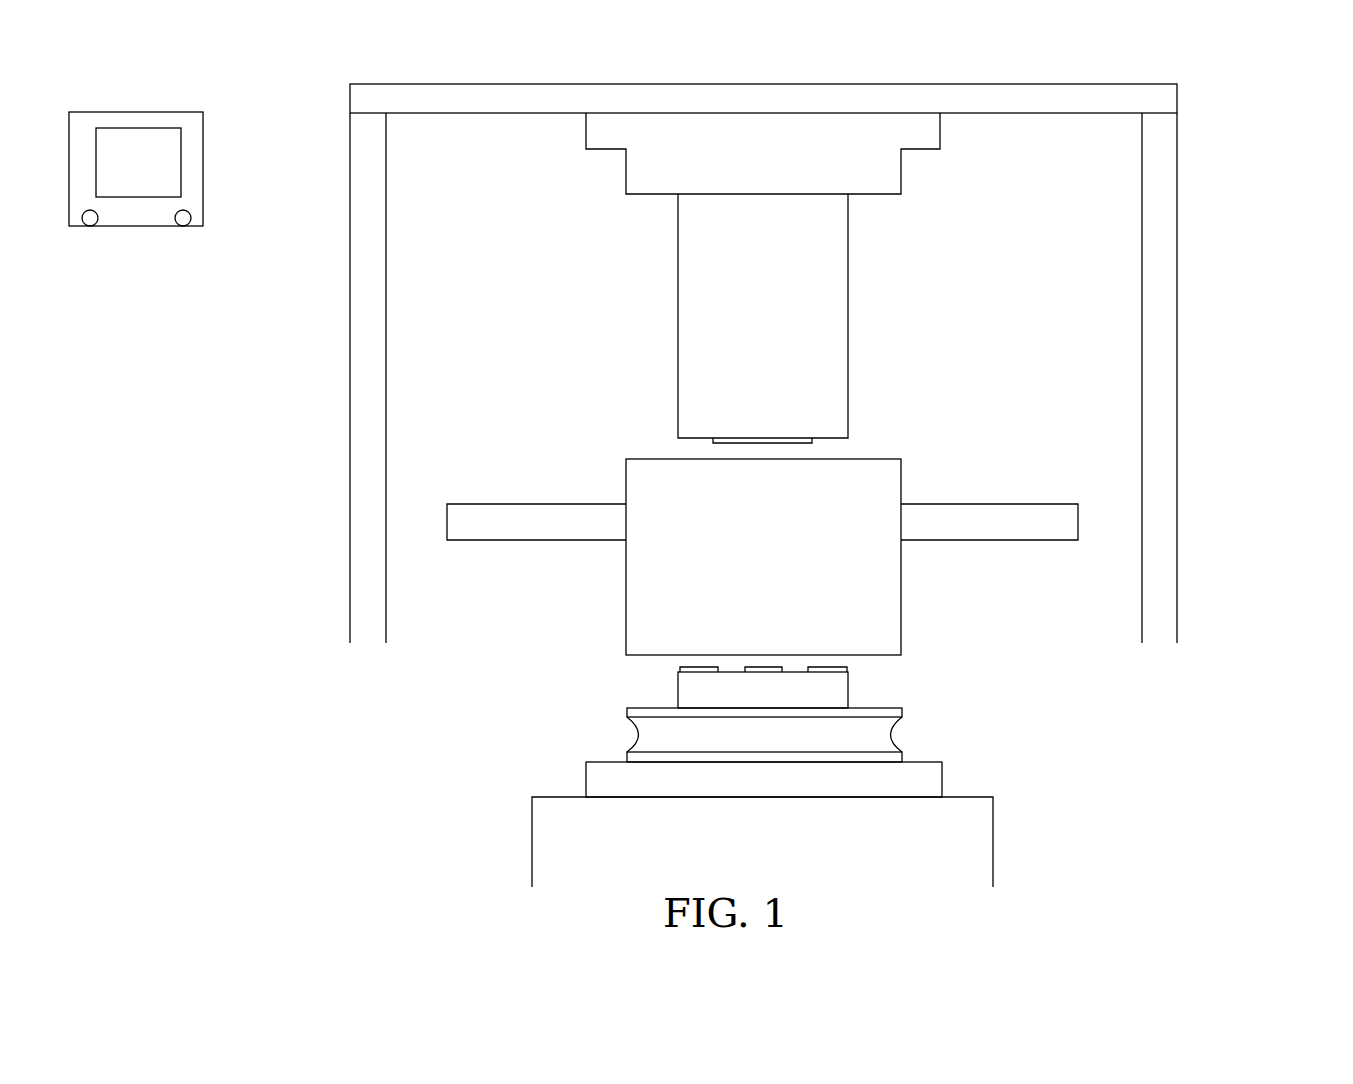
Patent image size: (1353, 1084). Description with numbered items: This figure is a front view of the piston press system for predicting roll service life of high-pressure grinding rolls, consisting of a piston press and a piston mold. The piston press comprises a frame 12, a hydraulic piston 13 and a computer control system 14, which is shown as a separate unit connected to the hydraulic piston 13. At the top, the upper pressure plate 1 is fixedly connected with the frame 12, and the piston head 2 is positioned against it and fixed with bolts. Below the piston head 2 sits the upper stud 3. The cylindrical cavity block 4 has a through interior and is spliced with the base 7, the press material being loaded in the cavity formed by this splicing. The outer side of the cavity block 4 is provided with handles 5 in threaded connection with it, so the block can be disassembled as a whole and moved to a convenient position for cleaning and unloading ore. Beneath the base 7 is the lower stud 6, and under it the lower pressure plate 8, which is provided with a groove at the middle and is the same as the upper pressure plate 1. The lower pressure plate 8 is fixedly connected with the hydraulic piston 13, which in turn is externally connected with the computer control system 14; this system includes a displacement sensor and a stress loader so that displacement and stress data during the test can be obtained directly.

The upper pressure plate 1 is at (870, 135).
The piston head 2 is at (770, 280).
The upper stud 3 is at (807, 442).
The cavity block 4 is at (883, 480).
The handle 5 is at (1007, 521).
The lower stud 6 is at (680, 667).
The base 7 is at (698, 733).
The lower pressure plate 8 is at (640, 787).
The frame 12 is at (1013, 100).
The hydraulic piston 13 is at (572, 833).
The computer control system 14 is at (132, 167).